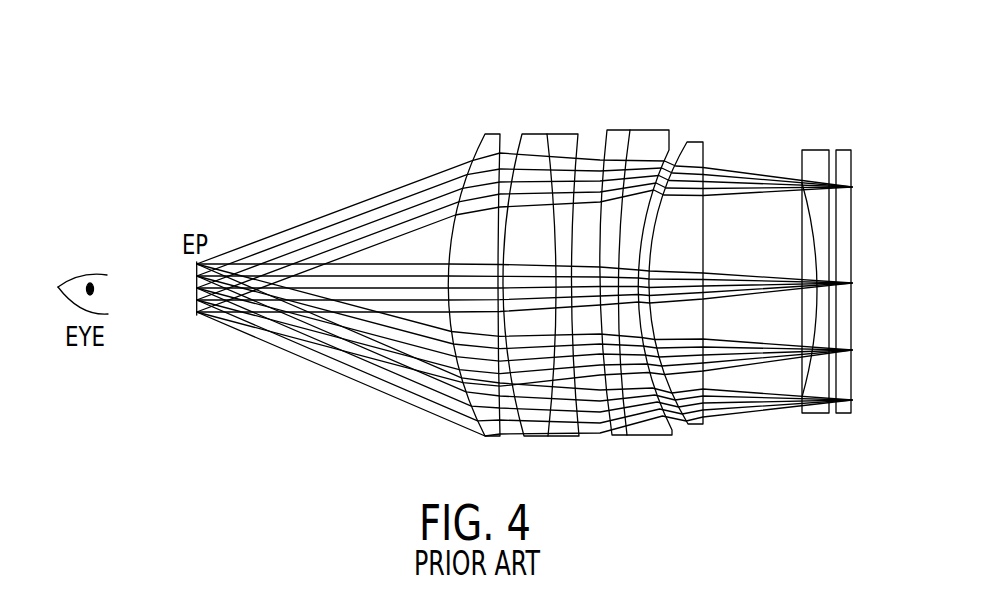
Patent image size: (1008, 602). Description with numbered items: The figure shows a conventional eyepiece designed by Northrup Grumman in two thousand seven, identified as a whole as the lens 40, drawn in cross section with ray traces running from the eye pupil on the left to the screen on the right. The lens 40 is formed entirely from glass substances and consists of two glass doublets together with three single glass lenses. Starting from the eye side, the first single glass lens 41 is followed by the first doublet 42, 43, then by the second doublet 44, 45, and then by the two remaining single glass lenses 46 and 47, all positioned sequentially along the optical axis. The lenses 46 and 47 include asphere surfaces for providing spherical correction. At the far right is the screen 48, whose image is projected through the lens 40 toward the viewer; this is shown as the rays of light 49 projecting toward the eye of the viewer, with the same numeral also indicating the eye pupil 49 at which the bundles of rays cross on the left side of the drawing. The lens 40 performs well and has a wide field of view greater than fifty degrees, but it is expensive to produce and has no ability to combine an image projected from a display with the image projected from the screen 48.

The lens 40 is at (368, 120).
The glass lens 41 is at (483, 141).
The first doublet lens element 42 is at (526, 138).
The first doublet lens element 43 is at (564, 136).
The second doublet lens element 44 is at (617, 132).
The second doublet lens element 45 is at (652, 136).
The glass lens 46 is at (697, 146).
The glass lens 47 is at (815, 160).
The screen 48 is at (845, 158).
The rays of light / eye pupil 49 is at (195, 321).